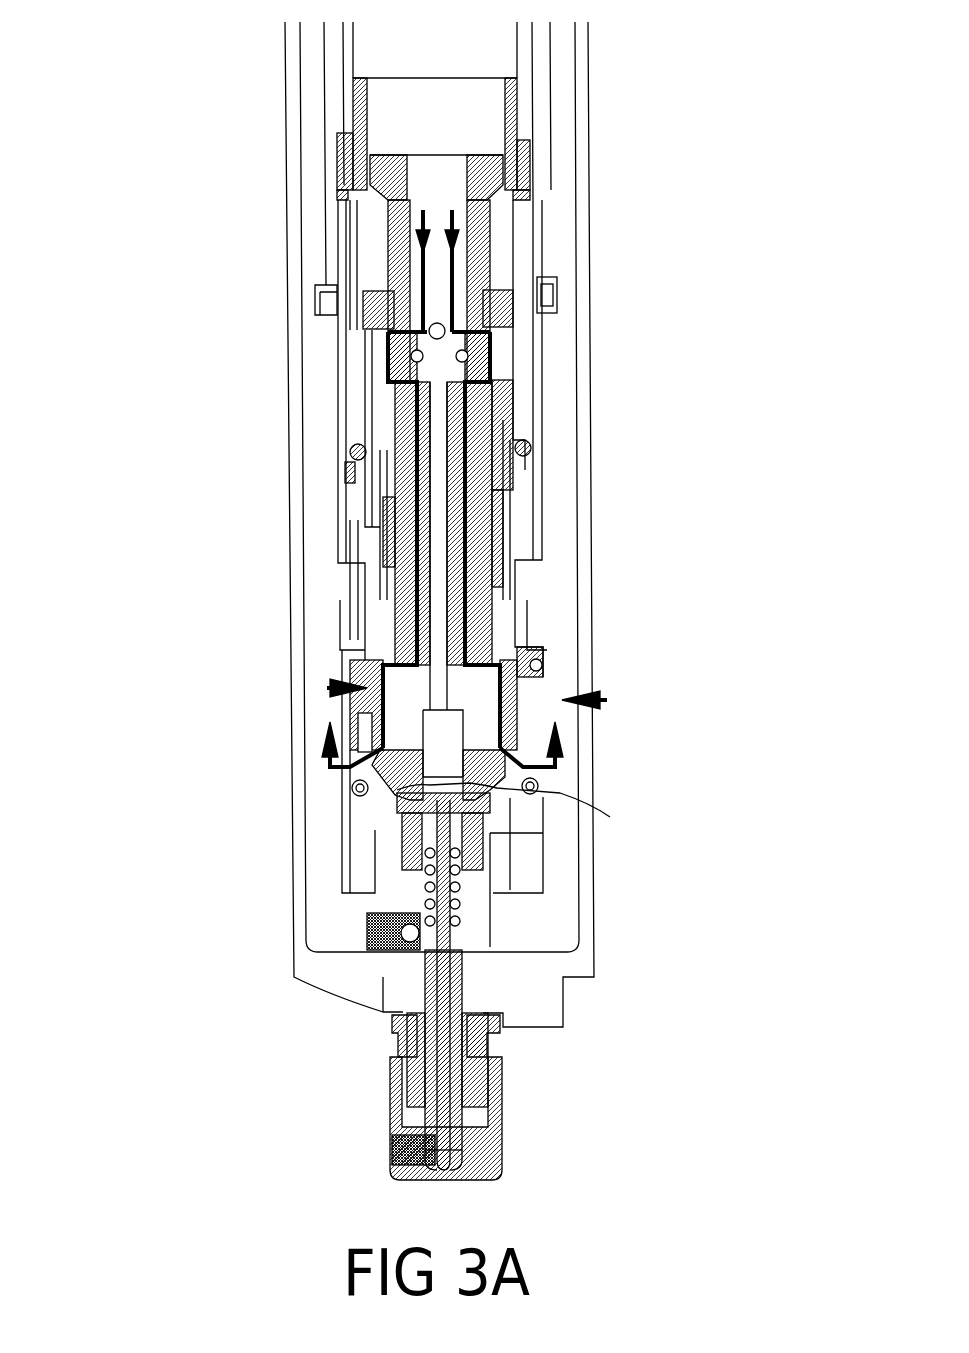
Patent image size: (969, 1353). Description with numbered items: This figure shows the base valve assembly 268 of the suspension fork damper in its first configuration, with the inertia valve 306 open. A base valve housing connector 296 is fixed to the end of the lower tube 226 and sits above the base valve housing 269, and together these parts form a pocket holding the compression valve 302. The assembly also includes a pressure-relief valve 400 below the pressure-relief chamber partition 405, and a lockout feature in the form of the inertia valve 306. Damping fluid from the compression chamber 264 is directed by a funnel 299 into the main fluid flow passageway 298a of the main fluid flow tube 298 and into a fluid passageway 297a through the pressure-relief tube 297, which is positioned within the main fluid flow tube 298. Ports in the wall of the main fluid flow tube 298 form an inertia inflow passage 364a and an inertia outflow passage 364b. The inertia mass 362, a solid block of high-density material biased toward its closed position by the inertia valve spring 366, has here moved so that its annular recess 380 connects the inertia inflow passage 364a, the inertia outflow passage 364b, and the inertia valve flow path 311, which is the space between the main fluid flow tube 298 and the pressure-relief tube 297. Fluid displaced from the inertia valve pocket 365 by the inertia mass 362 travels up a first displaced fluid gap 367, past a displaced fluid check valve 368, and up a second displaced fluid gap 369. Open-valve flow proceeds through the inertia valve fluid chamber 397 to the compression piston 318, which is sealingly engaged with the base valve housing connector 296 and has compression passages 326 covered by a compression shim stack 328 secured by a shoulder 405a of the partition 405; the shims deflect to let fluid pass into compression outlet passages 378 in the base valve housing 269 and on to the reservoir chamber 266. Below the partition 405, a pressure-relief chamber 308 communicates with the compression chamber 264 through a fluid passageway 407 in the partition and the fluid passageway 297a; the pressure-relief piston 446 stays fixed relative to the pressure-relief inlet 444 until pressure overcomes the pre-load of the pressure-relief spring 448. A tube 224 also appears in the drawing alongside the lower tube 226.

The compression chamber 264 is at (452, 50).
The lower tube 226 is at (590, 92).
The inner tube 224 is at (551, 117).
The main fluid flow passageway 298a is at (460, 267).
The main fluid flow tube 298 is at (475, 280).
The funnel 299 is at (388, 180).
The inertia valve 306 is at (366, 296).
The inertia inflow passage 364a is at (363, 327).
The second displaced fluid gap 369 is at (357, 350).
The annular recess 380 is at (390, 380).
The inertia outflow passage 364b is at (392, 387).
The displaced fluid check valve 368 is at (363, 455).
The first displaced fluid gap 367 is at (388, 497).
The inertia valve flow path 311 is at (380, 503).
The inertia valve pocket 365 is at (390, 527).
The inertia mass 362 is at (505, 406).
The fluid passageway 297a is at (440, 503).
The inertia valve spring 366 is at (497, 525).
The pressure-relief tube 297 is at (455, 540).
The base valve housing connector 296 is at (497, 610).
The inertia valve fluid chamber 397 is at (375, 600).
The compression passages 326 is at (343, 727).
The compression valve 302 is at (327, 688).
The compression piston 318 is at (345, 709).
The shoulder 405a is at (322, 758).
The compression outlet passages 378 is at (345, 775).
The base valve assembly 268 is at (605, 705).
The compression shim stack 328 is at (433, 750).
The fluid passageway 407 is at (610, 817).
The pressure-relief chamber 308 is at (515, 815).
The pressure-relief chamber partition 405 is at (372, 815).
The pressure-relief inlet 444 is at (397, 790).
The base valve housing 269 is at (375, 855).
The pressure-relief piston 446 is at (400, 835).
The pressure-relief spring 448 is at (407, 950).
The pressure-relief valve 400 is at (490, 875).
The reservoir chamber 266 is at (510, 940).